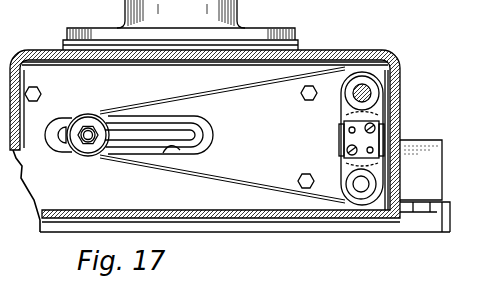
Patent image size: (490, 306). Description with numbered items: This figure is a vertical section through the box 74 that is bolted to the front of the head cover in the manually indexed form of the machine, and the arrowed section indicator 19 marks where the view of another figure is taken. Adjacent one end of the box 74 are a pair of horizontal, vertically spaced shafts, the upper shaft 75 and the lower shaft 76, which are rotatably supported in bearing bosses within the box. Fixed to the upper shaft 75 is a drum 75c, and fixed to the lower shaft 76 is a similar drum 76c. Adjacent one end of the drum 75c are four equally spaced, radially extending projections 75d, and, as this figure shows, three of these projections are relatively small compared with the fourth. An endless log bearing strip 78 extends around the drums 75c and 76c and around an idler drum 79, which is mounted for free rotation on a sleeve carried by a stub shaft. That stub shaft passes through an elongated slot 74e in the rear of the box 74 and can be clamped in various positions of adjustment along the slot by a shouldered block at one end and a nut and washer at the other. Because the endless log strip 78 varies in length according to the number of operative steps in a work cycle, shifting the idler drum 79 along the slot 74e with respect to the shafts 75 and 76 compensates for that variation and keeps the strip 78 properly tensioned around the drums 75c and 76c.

The box 74 is at (45, 55).
The elongated slot 74e is at (183, 151).
The upper shaft 75 is at (369, 90).
The drum 75c is at (341, 103).
The radially extending projections 75d is at (379, 60).
The lower shaft 76 is at (361, 190).
The drum 76c is at (343, 212).
The endless log bearing strip 78 is at (217, 91).
The idler drum 79 is at (88, 114).
The section line indicator for FIG. 19 is at (363, 0).